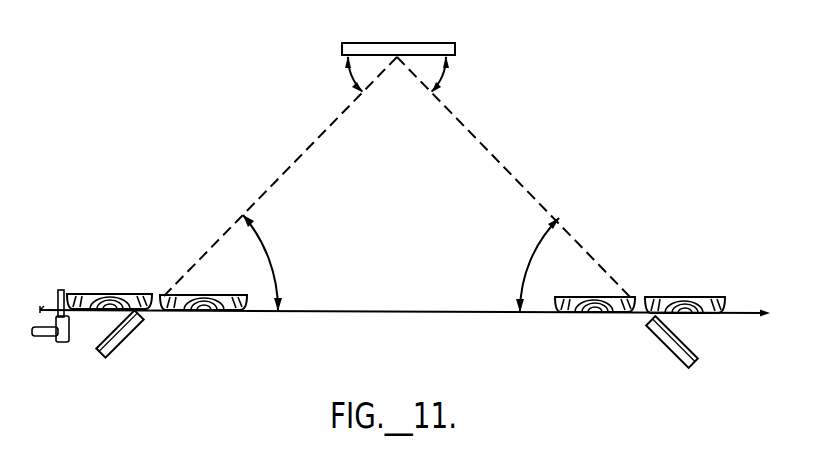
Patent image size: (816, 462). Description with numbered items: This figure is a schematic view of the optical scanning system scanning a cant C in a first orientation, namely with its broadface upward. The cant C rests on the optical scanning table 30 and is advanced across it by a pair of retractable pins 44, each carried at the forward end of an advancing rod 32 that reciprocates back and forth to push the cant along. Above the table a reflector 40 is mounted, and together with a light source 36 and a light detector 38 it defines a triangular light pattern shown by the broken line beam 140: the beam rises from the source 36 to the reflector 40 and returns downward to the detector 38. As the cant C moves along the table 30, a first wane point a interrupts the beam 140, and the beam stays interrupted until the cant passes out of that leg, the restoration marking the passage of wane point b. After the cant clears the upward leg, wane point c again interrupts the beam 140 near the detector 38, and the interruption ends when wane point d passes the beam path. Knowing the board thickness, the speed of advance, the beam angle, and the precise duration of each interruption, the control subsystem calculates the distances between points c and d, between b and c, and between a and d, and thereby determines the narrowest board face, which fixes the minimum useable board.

The optical scanning table 30 is at (337, 310).
The reflector 40 is at (406, 43).
The light beam 140 is at (286, 170).
The cant C is at (85, 294).
The first wane point a is at (144, 311).
The wane point b is at (160, 295).
The wane point c is at (632, 297).
The wane point d is at (645, 314).
The retractable pin 44 is at (61, 290).
The advancing rod 32 is at (48, 340).
The light source 36 is at (122, 350).
The light detector 38 is at (694, 345).